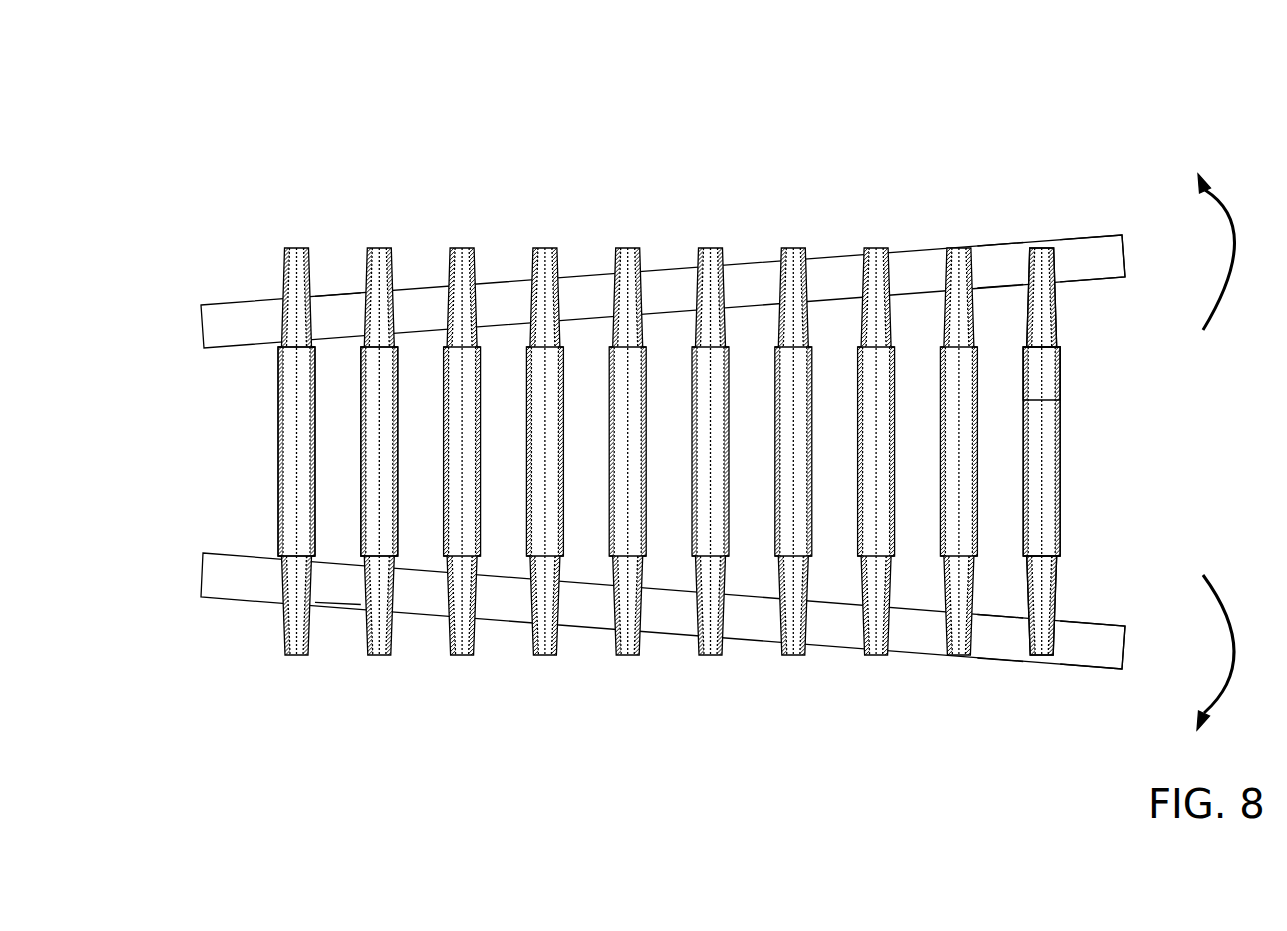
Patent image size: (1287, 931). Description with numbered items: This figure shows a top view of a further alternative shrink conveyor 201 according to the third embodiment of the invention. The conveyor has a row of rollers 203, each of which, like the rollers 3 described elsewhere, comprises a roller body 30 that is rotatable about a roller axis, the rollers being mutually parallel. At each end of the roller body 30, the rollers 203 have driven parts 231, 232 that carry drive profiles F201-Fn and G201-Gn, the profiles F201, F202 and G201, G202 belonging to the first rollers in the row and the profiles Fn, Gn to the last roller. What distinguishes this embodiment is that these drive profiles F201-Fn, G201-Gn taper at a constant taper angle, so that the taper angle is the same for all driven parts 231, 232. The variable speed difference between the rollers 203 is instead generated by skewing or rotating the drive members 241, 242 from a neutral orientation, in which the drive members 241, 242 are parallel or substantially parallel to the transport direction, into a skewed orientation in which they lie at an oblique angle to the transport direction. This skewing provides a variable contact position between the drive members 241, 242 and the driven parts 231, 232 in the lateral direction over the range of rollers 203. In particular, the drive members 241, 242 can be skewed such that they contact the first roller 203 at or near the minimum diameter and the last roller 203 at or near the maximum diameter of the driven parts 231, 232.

The shrink conveyor 201 is at (106, 126).
The drive member 241 is at (221, 323).
The drive member 242 is at (215, 588).
The roller 3 is at (617, 367).
The roller 203 is at (372, 382).
The roller body 30 is at (1047, 362).
The driven part 231 is at (1057, 315).
The driven part 232 is at (1047, 600).
The drive profile Fn is at (310, 297).
The drive profile Gn is at (293, 600).
The drive profile F201 is at (1057, 295).
The drive profile F202 is at (973, 307).
The drive profile G201 is at (1050, 611).
The drive profile G202 is at (965, 610).